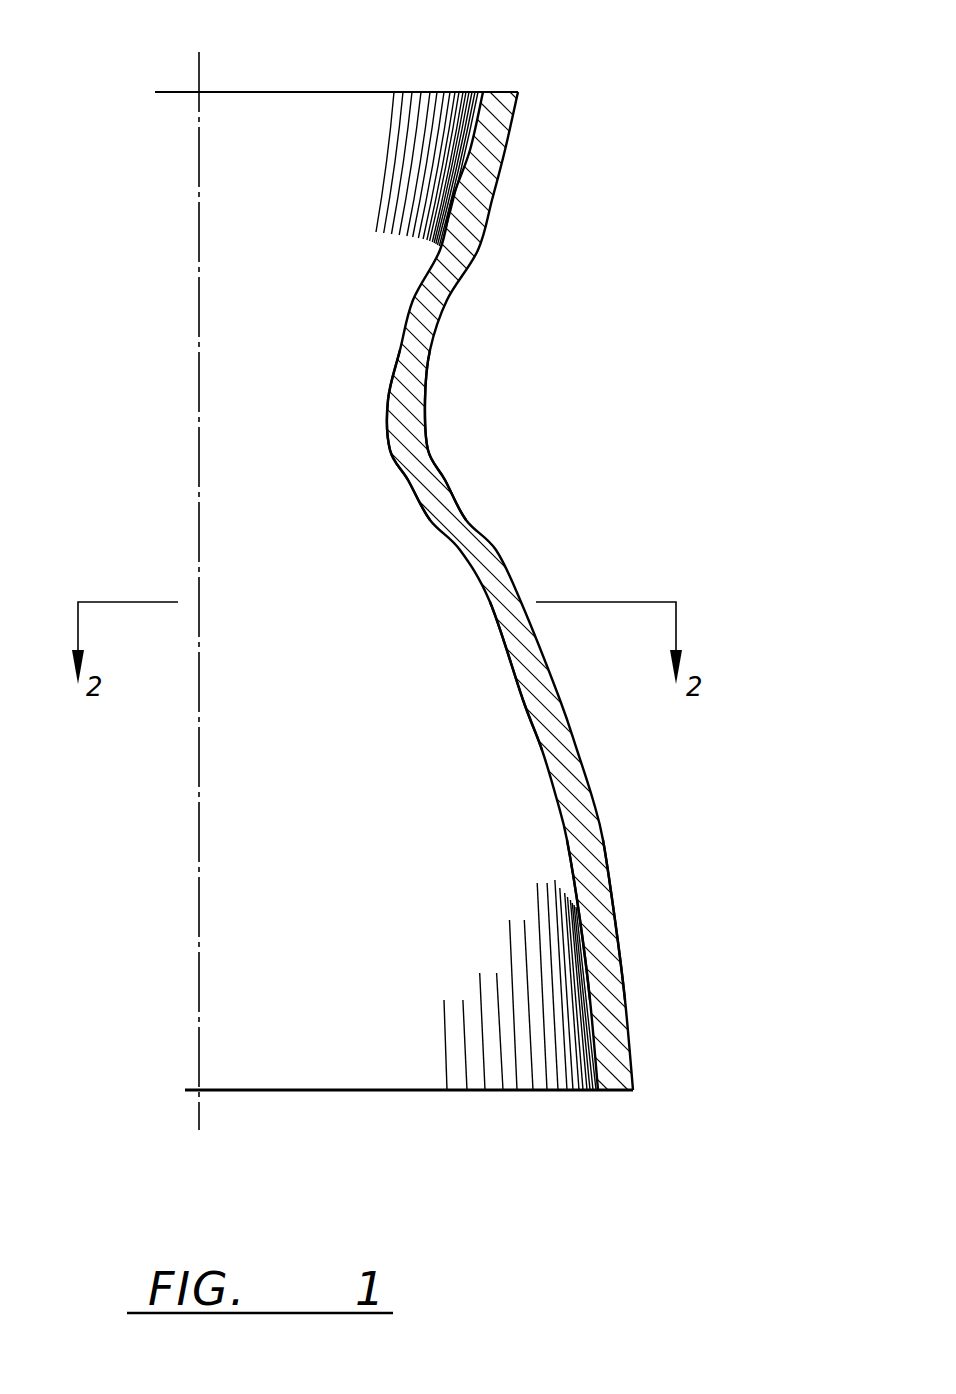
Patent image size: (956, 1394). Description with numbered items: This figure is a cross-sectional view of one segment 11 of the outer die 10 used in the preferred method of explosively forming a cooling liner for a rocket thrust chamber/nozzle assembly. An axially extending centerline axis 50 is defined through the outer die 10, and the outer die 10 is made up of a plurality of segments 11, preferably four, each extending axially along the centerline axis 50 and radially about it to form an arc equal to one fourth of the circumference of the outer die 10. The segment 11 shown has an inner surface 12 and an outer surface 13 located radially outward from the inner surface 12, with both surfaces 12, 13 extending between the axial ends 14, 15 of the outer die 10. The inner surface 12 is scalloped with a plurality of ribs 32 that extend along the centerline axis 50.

The outer die 10 is at (515, 214).
The segment 11 is at (605, 900).
The inner surface 12 is at (493, 662).
The outer surface 13 is at (468, 485).
The axial end 14 is at (342, 92).
The axial end 15 is at (527, 1093).
The rib 32 is at (417, 133).
The centerline axis 50 is at (195, 191).